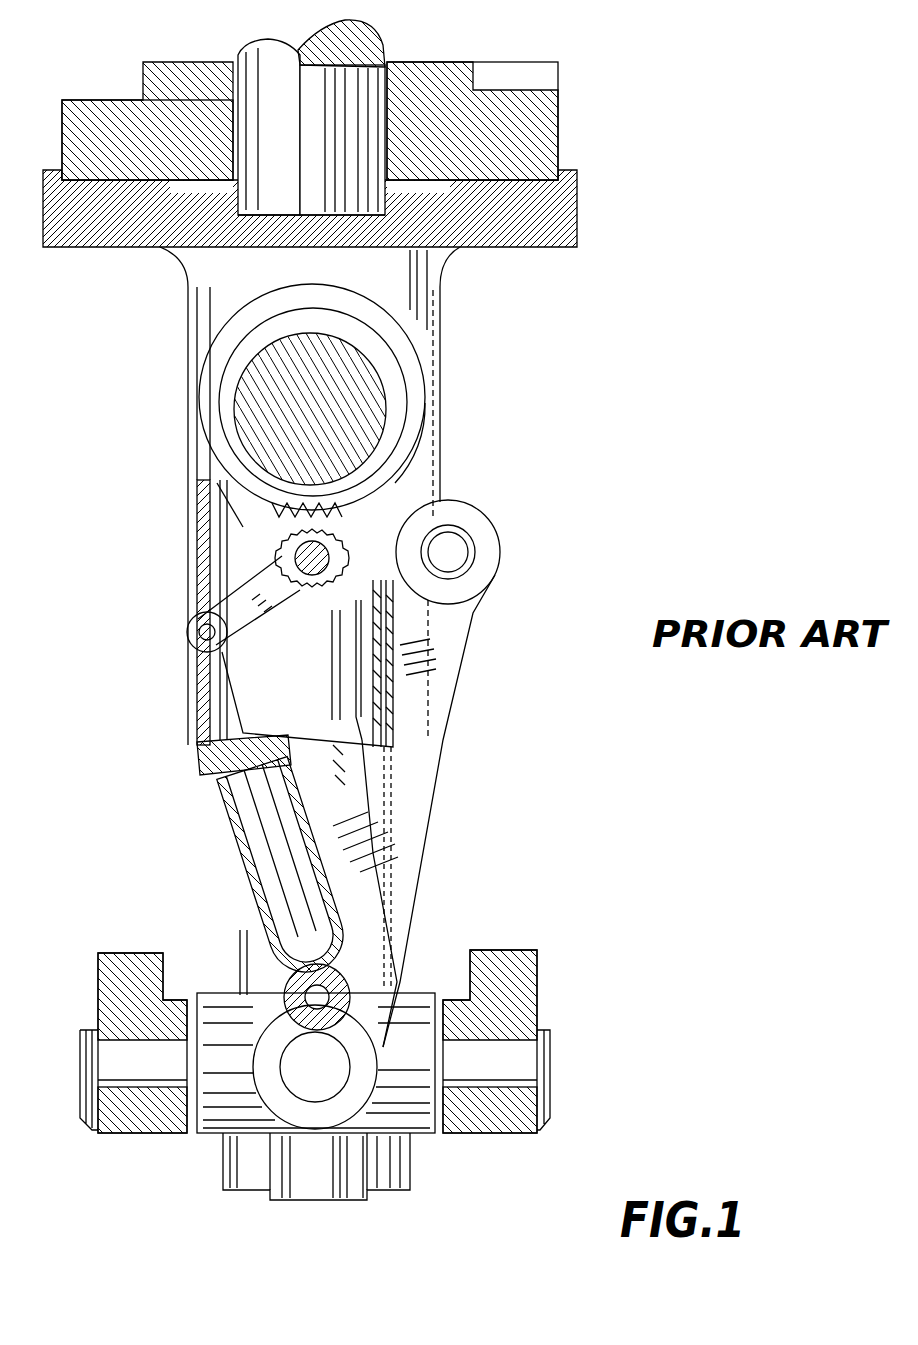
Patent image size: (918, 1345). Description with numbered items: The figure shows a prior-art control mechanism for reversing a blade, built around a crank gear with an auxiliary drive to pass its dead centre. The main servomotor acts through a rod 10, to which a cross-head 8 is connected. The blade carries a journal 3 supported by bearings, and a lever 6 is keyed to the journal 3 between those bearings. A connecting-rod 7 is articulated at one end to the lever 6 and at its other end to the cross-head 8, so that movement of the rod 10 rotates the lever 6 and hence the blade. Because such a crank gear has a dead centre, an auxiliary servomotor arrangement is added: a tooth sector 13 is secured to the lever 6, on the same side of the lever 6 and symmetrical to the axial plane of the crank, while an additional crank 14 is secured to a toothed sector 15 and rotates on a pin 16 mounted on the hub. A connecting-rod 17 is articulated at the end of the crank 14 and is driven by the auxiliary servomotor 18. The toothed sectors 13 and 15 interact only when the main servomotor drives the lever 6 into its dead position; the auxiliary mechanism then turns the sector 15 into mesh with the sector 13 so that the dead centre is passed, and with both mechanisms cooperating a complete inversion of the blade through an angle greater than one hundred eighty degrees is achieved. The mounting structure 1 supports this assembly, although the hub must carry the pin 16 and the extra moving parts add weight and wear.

The housing 1 is at (525, 238).
The rod 10 is at (270, 73).
The journal 3 is at (240, 357).
The tooth sector 13 is at (428, 403).
The lever 6 is at (443, 452).
The additional crank 14 is at (200, 552).
The pin 16 is at (308, 592).
The toothed sector 15 is at (367, 563).
The connecting-rod 17 is at (193, 693).
The auxiliary servomotor 18 is at (218, 820).
The connecting-rod 7 is at (407, 801).
The cross-head 8 is at (403, 1112).